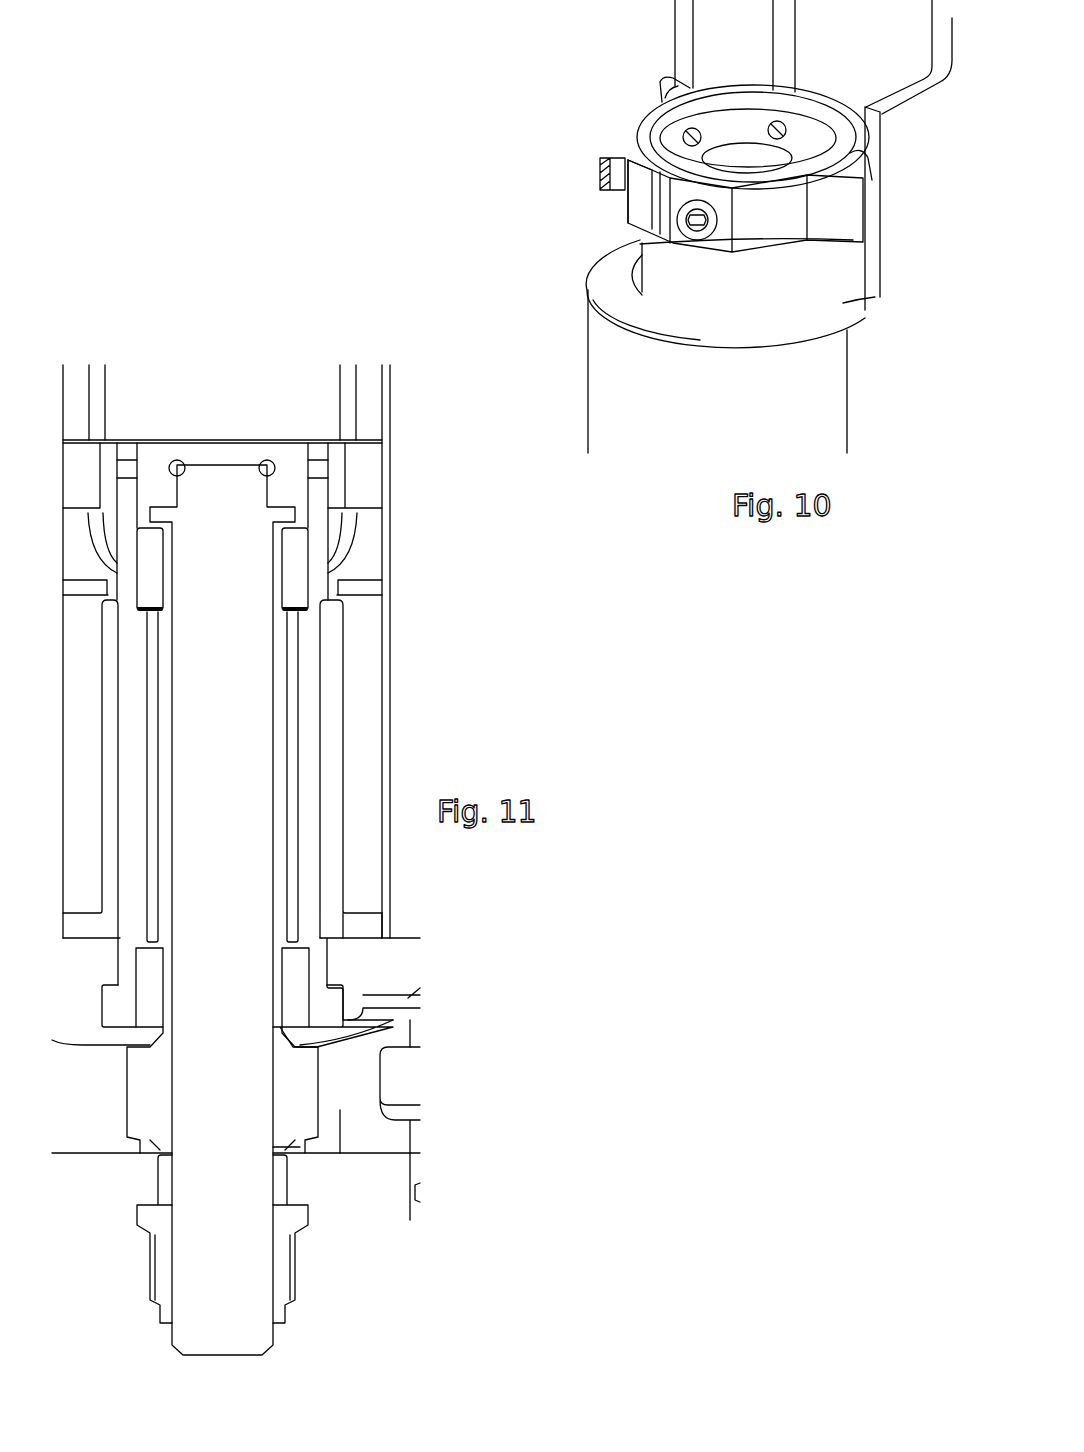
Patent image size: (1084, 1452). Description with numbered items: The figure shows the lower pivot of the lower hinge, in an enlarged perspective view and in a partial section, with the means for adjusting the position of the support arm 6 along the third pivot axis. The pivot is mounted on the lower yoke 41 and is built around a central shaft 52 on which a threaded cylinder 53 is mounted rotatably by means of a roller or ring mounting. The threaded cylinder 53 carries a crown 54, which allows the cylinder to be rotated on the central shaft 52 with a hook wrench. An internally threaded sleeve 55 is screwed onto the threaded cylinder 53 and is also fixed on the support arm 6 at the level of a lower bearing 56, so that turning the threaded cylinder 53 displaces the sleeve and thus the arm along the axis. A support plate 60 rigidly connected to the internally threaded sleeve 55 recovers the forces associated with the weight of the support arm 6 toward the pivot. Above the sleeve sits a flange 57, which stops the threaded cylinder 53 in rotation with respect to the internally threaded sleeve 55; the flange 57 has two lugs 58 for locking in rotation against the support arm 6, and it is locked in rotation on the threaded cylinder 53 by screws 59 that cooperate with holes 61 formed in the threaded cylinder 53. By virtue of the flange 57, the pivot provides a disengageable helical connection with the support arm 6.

In FIG. 10, the support arm 6 is at (940, 330).
In FIG. 11, the support arm 6 is at (375, 412).
In FIG. 11, the lower yoke 41 is at (340, 1112).
In FIG. 11, the central shaft 52 is at (205, 795).
In FIG. 10, the threaded cylinder 53 is at (677, 271).
In FIG. 11, the threaded cylinder 53 is at (313, 957).
In FIG. 11, the crown 54 is at (115, 1012).
In FIG. 11, the internally threaded sleeve 55 is at (333, 807).
In FIG. 10, the lower bearing 56 is at (630, 385).
In FIG. 10, the flange 57 is at (638, 128).
In FIG. 11, the flange 57 is at (127, 462).
In FIG. 10, the lugs 58 is at (672, 82).
In FIG. 11, the lugs 58 is at (77, 455).
In FIG. 10, the screws 59 is at (600, 170).
In FIG. 11, the support plate 60 is at (362, 927).
In FIG. 10, the holes 61 is at (777, 121).
In FIG. 11, the holes 61 is at (266, 461).